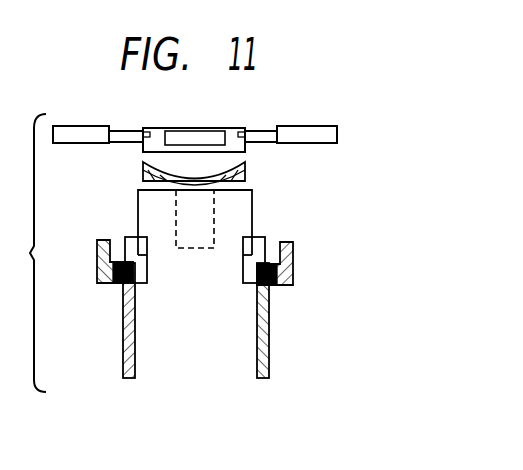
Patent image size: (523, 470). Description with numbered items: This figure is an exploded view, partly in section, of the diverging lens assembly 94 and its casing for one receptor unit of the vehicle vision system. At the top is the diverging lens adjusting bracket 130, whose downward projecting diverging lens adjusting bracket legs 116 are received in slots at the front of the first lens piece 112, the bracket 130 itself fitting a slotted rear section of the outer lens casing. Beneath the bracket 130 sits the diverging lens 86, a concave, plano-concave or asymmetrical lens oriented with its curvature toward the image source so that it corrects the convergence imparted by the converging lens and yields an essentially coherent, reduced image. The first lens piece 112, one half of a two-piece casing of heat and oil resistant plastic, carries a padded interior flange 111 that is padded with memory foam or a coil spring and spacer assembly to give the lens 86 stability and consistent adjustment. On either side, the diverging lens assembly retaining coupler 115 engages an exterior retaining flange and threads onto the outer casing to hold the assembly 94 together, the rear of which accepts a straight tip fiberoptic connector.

The diverging lens adjusting bracket 130 is at (265, 133).
The diverging lens 86 is at (245, 168).
The first lens piece 112 is at (252, 217).
The padded interior flange 111 is at (147, 257).
The diverging lens assembly retaining coupler 115 is at (97, 258).
The diverging lens adjusting bracket legs 116 is at (135, 348).
The diverging lens assembly 94 is at (292, 340).